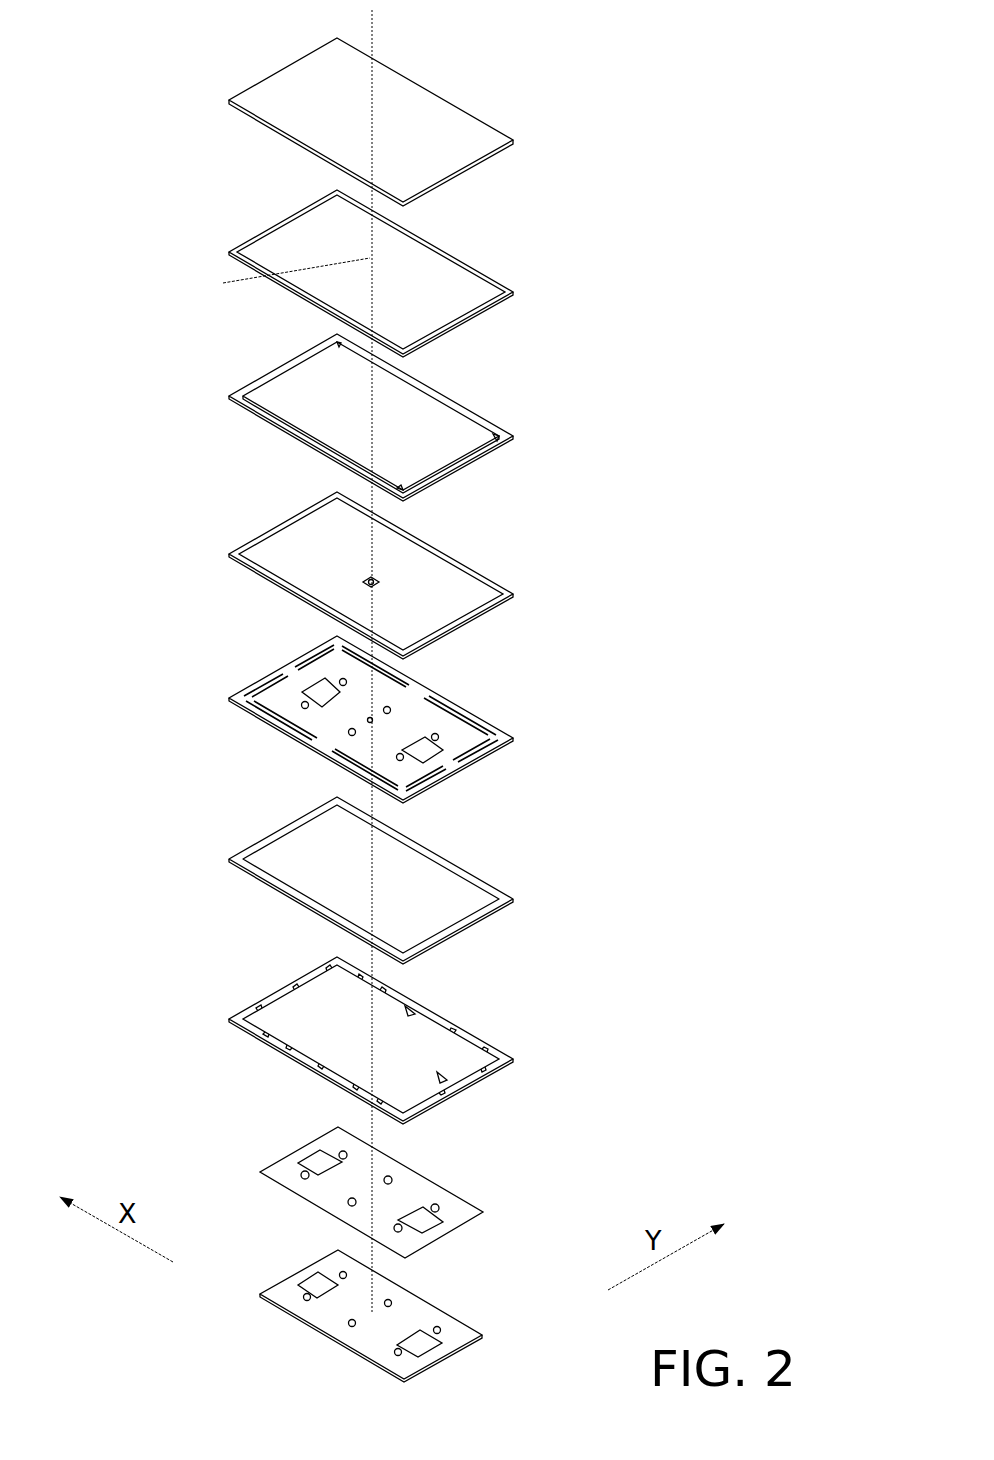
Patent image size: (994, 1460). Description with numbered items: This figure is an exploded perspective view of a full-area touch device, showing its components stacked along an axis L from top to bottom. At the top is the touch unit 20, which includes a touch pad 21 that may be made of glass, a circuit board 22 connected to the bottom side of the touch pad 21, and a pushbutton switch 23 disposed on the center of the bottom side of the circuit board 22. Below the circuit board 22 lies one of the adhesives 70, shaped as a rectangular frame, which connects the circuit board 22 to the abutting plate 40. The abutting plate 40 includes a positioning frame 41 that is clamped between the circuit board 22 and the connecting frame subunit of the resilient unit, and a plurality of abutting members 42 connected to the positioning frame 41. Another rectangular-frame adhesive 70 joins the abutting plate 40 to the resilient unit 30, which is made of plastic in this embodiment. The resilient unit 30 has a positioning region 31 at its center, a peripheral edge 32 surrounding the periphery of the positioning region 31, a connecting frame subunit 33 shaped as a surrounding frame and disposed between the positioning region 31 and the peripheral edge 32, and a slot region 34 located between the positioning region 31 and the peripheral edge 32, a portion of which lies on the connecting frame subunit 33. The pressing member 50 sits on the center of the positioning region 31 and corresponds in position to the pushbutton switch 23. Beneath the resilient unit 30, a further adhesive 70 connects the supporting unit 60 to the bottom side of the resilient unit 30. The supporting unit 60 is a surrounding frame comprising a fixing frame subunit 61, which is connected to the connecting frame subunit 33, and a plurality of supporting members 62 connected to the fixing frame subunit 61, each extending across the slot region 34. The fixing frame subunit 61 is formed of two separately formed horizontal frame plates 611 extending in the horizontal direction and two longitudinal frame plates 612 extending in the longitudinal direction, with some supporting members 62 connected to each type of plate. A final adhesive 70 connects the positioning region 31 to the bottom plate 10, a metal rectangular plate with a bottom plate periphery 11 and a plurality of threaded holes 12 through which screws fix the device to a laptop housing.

The bottom plate 10 is at (393, 1319).
The bottom plate periphery 11 is at (363, 1358).
The threaded holes 12 is at (305, 1298).
The touch unit 20 is at (420, 112).
The touch pad 21 is at (418, 103).
The circuit board 22 is at (487, 160).
The pushbutton switch 23 is at (375, 578).
The resilient unit 30 is at (385, 733).
The positioning region 31 is at (322, 725).
The peripheral edge 32 is at (248, 710).
The connecting frame subunit 33 is at (447, 768).
The slot region 34 is at (500, 727).
The abutting plate 40 is at (433, 426).
The positioning frame 41 is at (470, 408).
The abutting members 42 is at (502, 443).
The pressing member 50 is at (398, 721).
The supporting unit 60 is at (399, 1060).
The fixing frame subunit 61 is at (468, 1028).
The horizontal frame plates 611 is at (280, 1050).
The longitudinal frame plates 612 is at (272, 995).
The supporting members 62 is at (417, 1000).
The adhesives 70 is at (514, 280).
The axis L is at (286, 282).